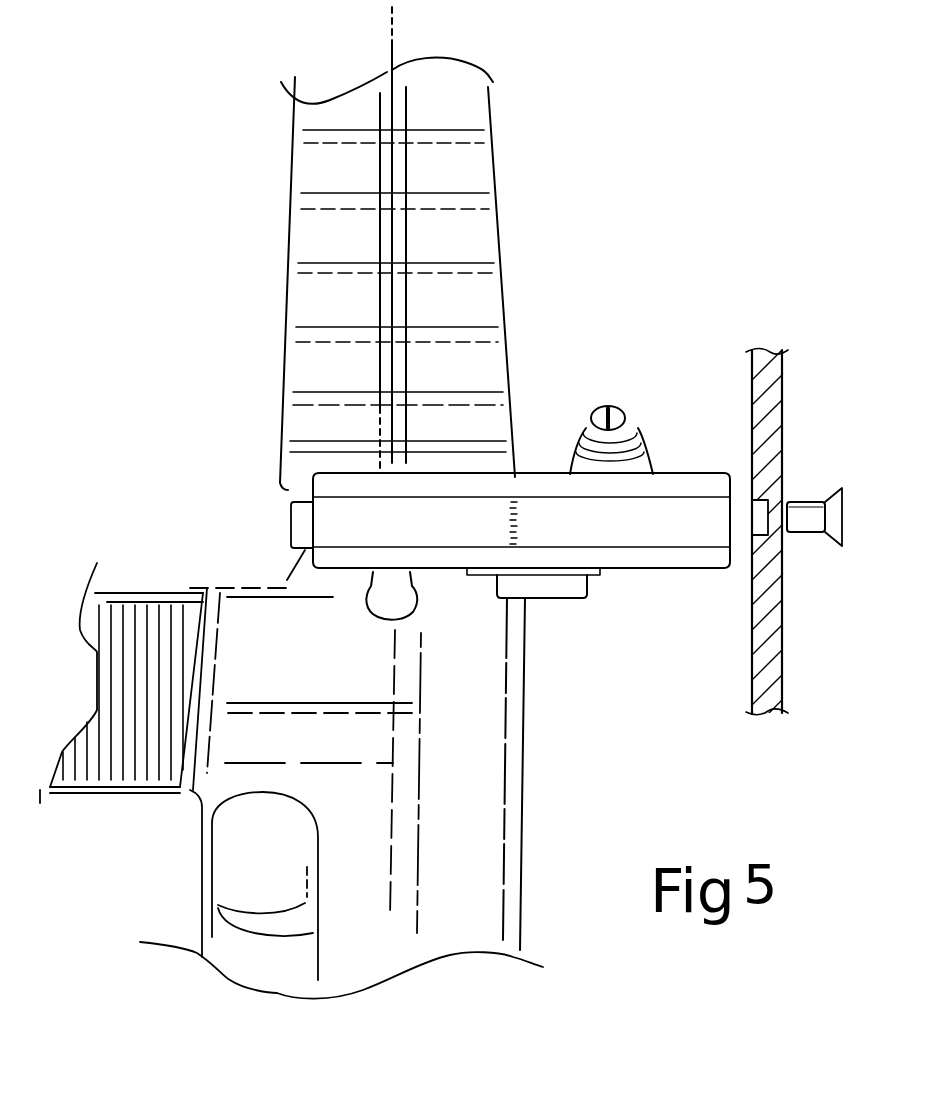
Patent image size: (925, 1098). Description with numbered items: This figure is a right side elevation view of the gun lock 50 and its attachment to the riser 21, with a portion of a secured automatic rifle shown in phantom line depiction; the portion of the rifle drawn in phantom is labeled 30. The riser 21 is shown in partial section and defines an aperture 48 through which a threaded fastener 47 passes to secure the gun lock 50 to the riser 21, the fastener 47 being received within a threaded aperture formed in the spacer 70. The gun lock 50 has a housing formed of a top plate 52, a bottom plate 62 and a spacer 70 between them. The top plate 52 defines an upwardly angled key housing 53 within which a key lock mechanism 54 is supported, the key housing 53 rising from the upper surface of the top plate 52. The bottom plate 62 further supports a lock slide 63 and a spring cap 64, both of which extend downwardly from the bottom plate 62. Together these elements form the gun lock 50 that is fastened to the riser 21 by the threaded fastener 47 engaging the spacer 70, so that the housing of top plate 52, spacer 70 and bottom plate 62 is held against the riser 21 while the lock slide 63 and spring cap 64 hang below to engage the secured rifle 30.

The riser 21 is at (758, 650).
The mast 30 is at (508, 315).
The threaded fastener 47 is at (802, 537).
The aperture 48 is at (763, 513).
The gun lock 50 is at (514, 475).
The top plate 52 is at (673, 483).
The key housing 53 is at (660, 463).
The key lock mechanism 54 is at (622, 383).
The bottom plate 62 is at (667, 560).
The lock slide 63 is at (367, 598).
The spring cap 64 is at (553, 590).
The spacer 70 is at (627, 530).